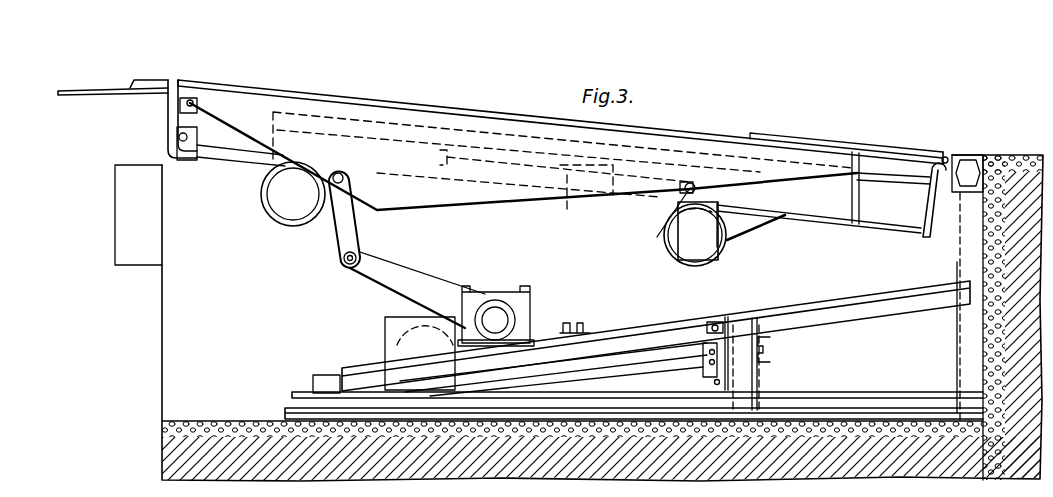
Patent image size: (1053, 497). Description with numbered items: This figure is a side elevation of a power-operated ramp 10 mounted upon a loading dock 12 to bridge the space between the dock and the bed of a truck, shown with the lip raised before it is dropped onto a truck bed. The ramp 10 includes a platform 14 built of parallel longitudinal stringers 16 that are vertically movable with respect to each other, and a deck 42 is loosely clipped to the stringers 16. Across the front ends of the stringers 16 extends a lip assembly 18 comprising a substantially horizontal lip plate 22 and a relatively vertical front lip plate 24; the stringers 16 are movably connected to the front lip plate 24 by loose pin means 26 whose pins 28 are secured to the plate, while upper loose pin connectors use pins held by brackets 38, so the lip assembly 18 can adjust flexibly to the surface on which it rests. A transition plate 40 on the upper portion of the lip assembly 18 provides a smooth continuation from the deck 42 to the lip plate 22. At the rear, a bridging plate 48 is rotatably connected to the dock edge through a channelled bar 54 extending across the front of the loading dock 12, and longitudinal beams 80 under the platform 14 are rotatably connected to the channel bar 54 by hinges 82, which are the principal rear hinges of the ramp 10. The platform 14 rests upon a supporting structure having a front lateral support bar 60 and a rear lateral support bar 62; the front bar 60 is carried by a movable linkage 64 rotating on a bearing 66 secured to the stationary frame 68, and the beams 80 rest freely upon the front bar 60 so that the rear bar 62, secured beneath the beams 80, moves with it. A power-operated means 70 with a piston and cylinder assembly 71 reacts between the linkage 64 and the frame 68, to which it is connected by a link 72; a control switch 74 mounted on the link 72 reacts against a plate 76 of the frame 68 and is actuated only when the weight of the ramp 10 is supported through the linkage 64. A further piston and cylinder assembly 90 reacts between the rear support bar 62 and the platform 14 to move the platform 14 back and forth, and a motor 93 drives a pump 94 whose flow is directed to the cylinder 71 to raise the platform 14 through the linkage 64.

The power-operated ramp 10 is at (296, 289).
The loading dock 12 is at (1007, 155).
The platform 14 is at (586, 158).
The longitudinal stringers 16 is at (813, 202).
The lip assembly 18 is at (127, 101).
The lip plate 22 is at (103, 90).
The front lip plate 24 is at (147, 93).
The loose pin means 26 is at (187, 150).
The pins 28 is at (202, 143).
The brackets 38 is at (192, 100).
The transition plate 40 is at (166, 79).
The deck 42 is at (468, 110).
The bridging plate 48 is at (807, 140).
The channelled bar 54 is at (957, 153).
The front lateral support bar 60 is at (262, 201).
The rear lateral support bar 62 is at (727, 250).
The movable linkage 64 is at (441, 277).
The bearing 66 is at (530, 303).
The stationary frame 68 is at (845, 311).
The power-operated means 70 is at (632, 379).
The piston and cylinder assembly 71 is at (603, 367).
The link 72 is at (770, 343).
The control switch 74 is at (714, 363).
The plate 76 is at (730, 380).
The longitudinal beams 80 is at (910, 212).
The hinges 82 is at (945, 157).
The piston and cylinder assembly 90 is at (563, 173).
The motor 93 is at (405, 352).
The pump 94 is at (392, 317).